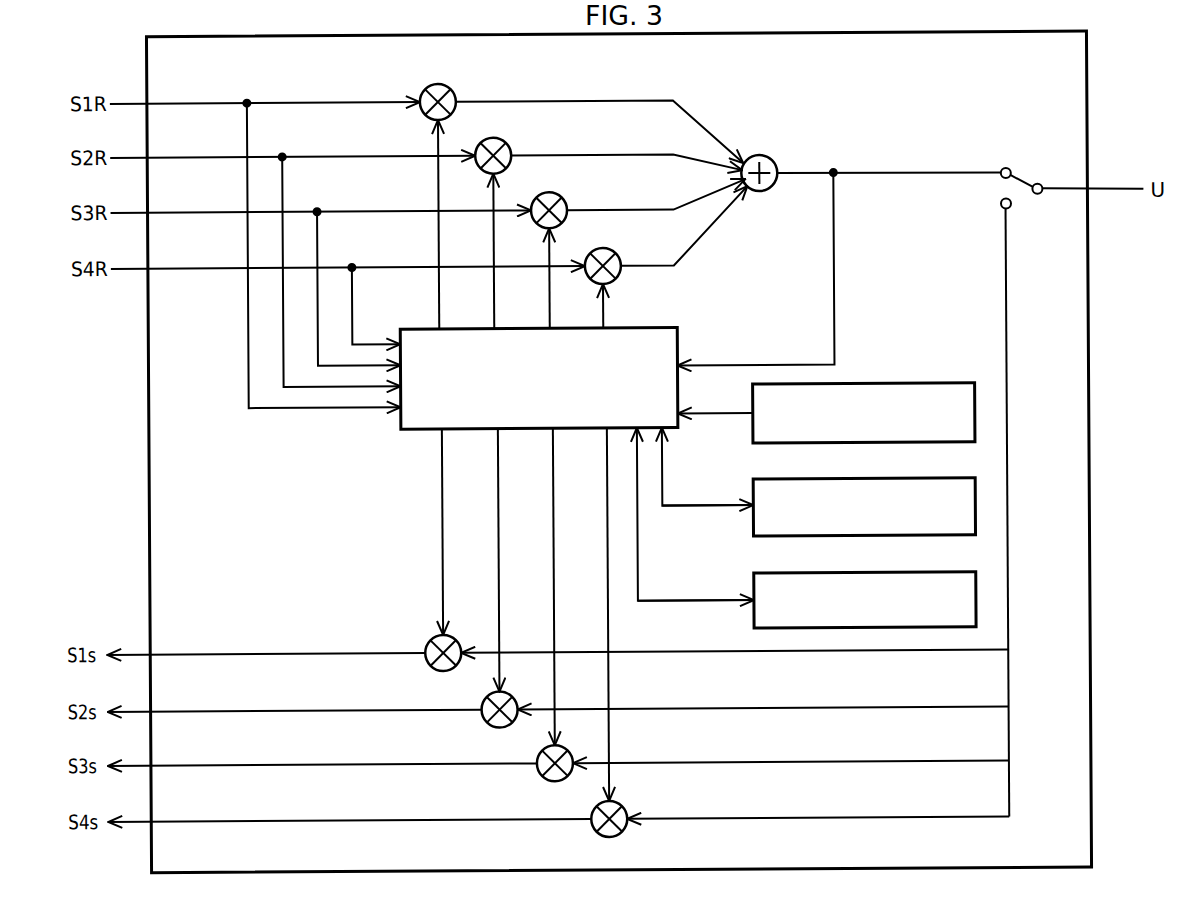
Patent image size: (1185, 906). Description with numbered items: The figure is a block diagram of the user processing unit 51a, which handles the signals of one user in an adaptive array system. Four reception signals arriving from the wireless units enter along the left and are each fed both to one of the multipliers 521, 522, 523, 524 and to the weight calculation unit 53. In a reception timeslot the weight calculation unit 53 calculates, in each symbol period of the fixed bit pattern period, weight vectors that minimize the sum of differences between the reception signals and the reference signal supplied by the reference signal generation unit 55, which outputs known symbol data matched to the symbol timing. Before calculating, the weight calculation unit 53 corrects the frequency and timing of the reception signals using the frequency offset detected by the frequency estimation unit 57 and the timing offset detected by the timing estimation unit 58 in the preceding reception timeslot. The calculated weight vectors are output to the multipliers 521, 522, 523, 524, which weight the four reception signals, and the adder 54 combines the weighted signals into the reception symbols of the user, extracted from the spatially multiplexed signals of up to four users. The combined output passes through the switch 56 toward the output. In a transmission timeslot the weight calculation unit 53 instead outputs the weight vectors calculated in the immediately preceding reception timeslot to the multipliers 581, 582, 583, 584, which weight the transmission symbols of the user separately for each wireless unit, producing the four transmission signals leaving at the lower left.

The user processing unit 51a is at (618, 452).
The multiplier 521 is at (452, 89).
The multiplier 522 is at (508, 145).
The multiplier 523 is at (562, 199).
The multiplier 524 is at (617, 254).
The weight calculation unit 53 is at (651, 328).
The adder 54 is at (774, 161).
The reference signal generation unit 55 is at (894, 385).
The switch 56 is at (1020, 180).
The frequency estimation unit 57 is at (894, 480).
The timing estimation unit 58 is at (894, 574).
The multiplier 581 is at (455, 640).
The multiplier 582 is at (511, 697).
The multiplier 583 is at (566, 751).
The multiplier 584 is at (620, 808).